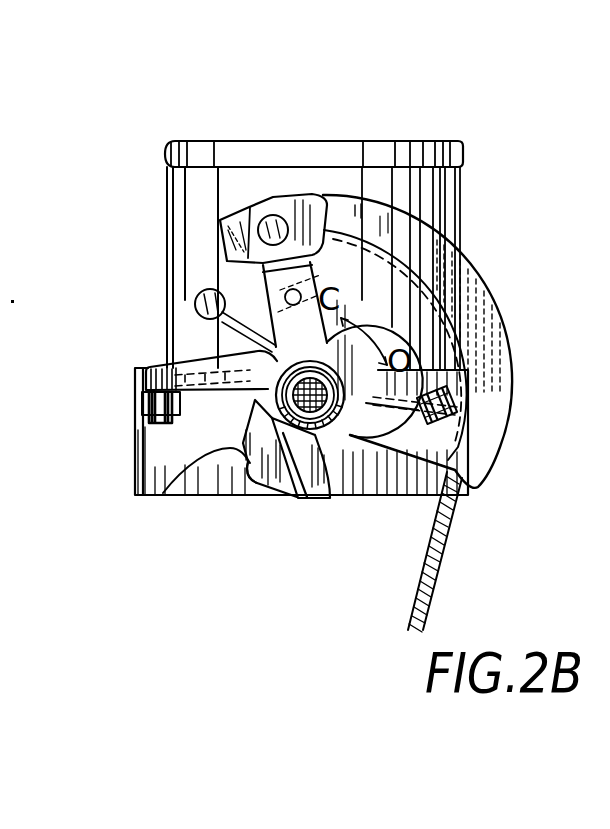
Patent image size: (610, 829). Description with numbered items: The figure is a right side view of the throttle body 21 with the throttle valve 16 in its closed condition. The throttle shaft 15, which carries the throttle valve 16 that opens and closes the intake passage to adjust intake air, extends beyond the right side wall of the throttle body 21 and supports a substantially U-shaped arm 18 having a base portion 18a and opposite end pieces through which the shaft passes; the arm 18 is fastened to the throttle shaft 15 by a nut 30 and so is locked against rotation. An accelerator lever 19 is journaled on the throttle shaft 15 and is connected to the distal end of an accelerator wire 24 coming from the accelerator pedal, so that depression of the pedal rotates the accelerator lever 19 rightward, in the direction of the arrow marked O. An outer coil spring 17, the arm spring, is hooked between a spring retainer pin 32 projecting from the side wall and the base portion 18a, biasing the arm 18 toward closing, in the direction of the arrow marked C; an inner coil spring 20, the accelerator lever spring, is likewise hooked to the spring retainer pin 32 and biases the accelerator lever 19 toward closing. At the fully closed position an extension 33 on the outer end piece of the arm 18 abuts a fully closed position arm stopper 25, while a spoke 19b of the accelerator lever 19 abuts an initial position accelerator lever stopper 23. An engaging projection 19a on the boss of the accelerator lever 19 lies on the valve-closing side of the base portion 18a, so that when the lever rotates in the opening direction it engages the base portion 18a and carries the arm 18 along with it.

The throttle shaft 15 is at (250, 412).
The throttle valve 16 is at (205, 364).
The outer coil spring 17 is at (250, 487).
The arm 18 is at (170, 497).
The base portion 18a is at (290, 482).
The accelerator lever 19 is at (474, 293).
The engaging projection 19a is at (327, 500).
The spoke 19b is at (427, 443).
The inner coil spring 20 is at (365, 232).
The throttle body 21 is at (205, 146).
The initial position accelerator lever stopper 23 is at (400, 421).
The accelerator wire 24 is at (440, 573).
The fully closed position arm stopper 25 is at (140, 383).
The nut 30 is at (352, 492).
The spring retainer pin 32 is at (222, 300).
The extension 33 is at (163, 370).